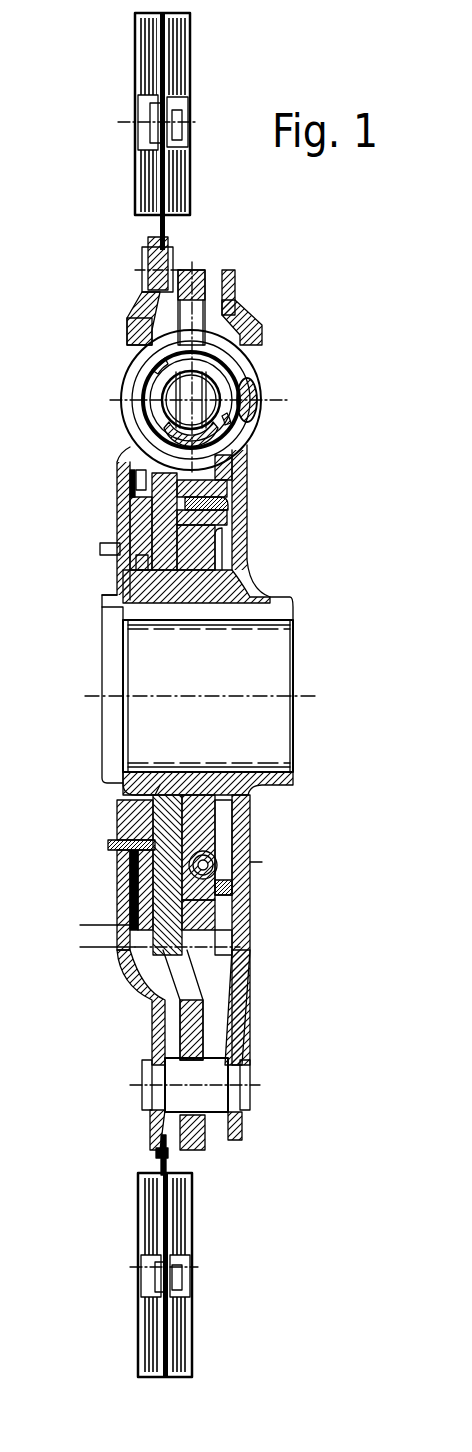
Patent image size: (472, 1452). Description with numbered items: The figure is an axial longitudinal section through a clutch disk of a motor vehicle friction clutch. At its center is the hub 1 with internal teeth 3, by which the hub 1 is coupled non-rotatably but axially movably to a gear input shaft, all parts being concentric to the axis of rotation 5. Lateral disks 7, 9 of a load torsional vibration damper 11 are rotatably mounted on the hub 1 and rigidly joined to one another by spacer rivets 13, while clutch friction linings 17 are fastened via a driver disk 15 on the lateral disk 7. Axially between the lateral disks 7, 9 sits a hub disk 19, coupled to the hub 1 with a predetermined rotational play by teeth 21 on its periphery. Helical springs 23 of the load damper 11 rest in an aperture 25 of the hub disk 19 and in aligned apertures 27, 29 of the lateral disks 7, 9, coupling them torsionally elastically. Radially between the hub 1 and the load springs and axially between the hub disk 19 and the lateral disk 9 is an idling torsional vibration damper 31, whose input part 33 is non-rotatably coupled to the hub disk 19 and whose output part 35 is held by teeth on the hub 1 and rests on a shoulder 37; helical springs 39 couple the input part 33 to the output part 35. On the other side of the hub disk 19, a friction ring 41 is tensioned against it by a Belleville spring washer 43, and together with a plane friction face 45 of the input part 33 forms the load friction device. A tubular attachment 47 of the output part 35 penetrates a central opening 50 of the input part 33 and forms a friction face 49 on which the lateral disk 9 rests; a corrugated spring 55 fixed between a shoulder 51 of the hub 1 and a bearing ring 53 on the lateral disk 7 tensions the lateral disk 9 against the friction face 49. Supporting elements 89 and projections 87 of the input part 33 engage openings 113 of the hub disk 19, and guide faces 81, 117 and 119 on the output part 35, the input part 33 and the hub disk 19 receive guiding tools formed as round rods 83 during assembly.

The hub 1 is at (126, 620).
The internal teeth 3 is at (270, 638).
The axis of rotation 5 is at (325, 693).
The lateral disk 7 is at (123, 452).
The lateral disk 9 is at (249, 472).
The load torsional vibration damper 11 is at (118, 375).
The spacer rivets 13 is at (232, 1124).
The driver disk 15 is at (165, 225).
The clutch friction linings 17 is at (172, 52).
The hub disk 19 is at (197, 298).
The teeth 21 is at (130, 782).
The helical springs 23 is at (255, 380).
The aperture 25 is at (198, 310).
The aperture 27 is at (130, 326).
The aperture 29 is at (240, 330).
The idling torsional vibration damper 31 is at (258, 862).
The input part 33 is at (247, 515).
The output part 35 is at (250, 908).
The shoulder 37 is at (110, 601).
The helical springs 39 is at (250, 855).
The friction ring 41 is at (122, 527).
The Belleville spring washer 43 is at (122, 492).
The friction face 45 is at (248, 553).
The tubular attachment 47 is at (255, 762).
The friction face 49 is at (252, 808).
The central opening 50 is at (250, 827).
The shoulder 51 is at (118, 812).
The bearing ring 53 is at (118, 580).
The corrugated spring 55 is at (100, 549).
The guide faces 81 is at (248, 968).
The round rods 83 is at (100, 955).
The projections 87 is at (247, 505).
The supporting elements 89 is at (247, 462).
The openings 113 is at (128, 468).
The guide faces 117 is at (250, 943).
The guide faces 119 is at (134, 930).